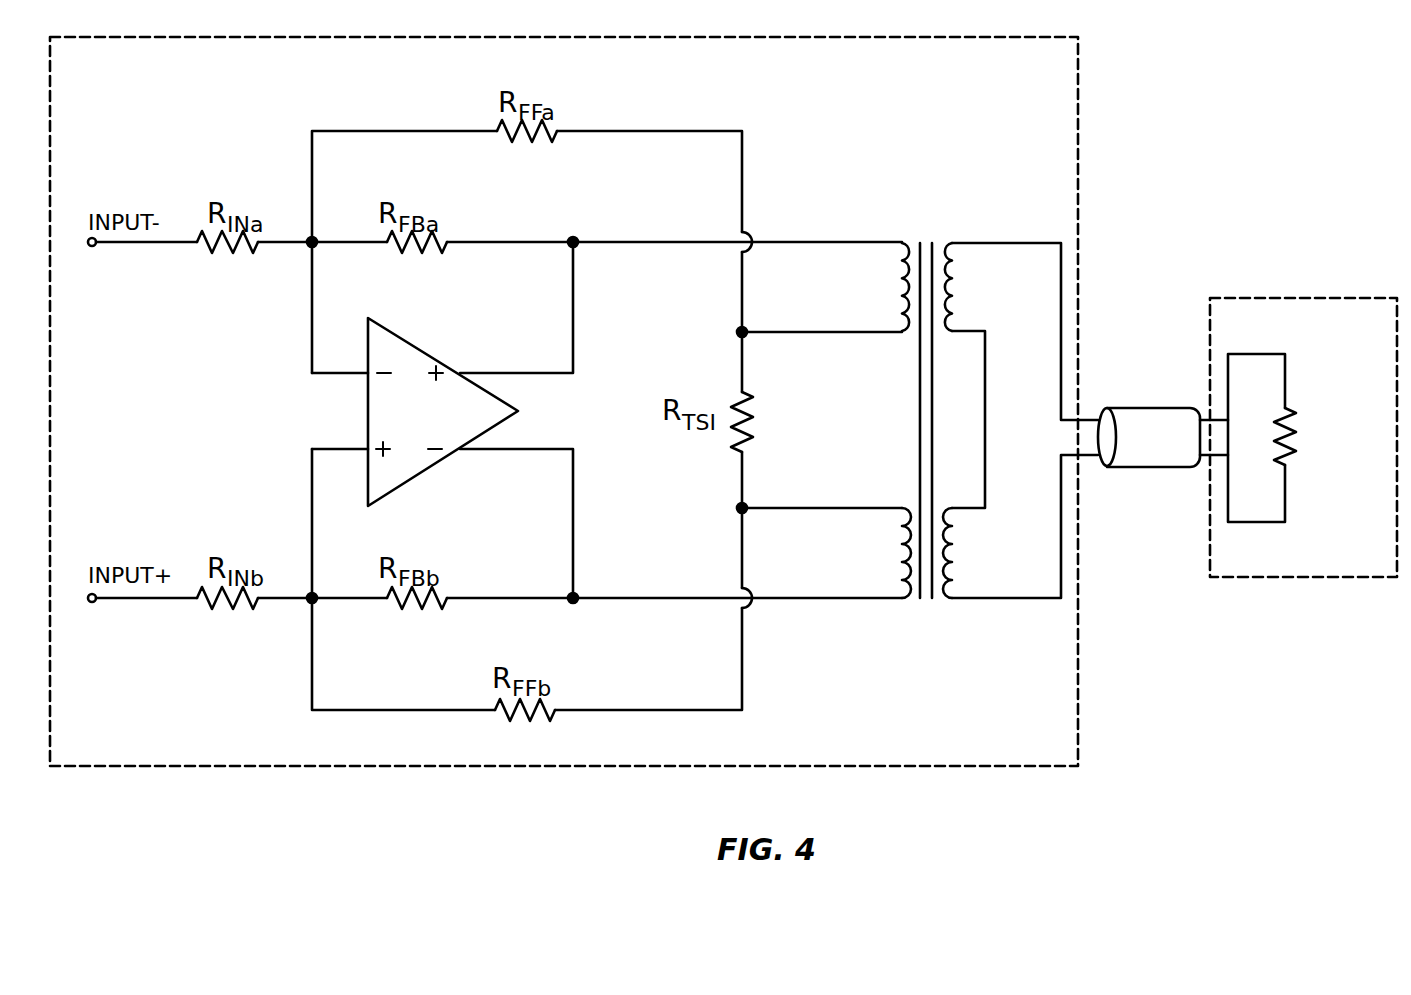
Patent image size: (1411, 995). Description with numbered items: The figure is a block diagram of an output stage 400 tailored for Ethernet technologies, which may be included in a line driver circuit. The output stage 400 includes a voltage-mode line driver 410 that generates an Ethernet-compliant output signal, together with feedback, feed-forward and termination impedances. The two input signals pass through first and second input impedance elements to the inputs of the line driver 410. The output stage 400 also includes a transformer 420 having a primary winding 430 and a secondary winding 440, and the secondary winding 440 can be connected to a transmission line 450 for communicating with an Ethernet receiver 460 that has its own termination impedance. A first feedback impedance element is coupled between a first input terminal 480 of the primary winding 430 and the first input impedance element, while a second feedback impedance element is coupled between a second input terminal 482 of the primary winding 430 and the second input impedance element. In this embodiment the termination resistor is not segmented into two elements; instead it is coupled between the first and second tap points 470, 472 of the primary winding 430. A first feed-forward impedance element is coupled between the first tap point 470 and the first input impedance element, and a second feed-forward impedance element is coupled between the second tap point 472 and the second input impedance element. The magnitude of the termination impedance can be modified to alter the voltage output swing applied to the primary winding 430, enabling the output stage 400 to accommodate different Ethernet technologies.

The output stage 400 is at (107, 752).
The voltage-mode line driver 410 is at (410, 340).
The transformer 420 is at (955, 433).
The primary winding 430 is at (912, 617).
The secondary winding 440 is at (942, 627).
The transmission line 450 is at (1153, 467).
The Ethernet receiver 460 is at (1268, 564).
The first tap point 470 is at (757, 323).
The second tap point 472 is at (755, 497).
The first input terminal 480 is at (582, 222).
The second input terminal 482 is at (590, 630).